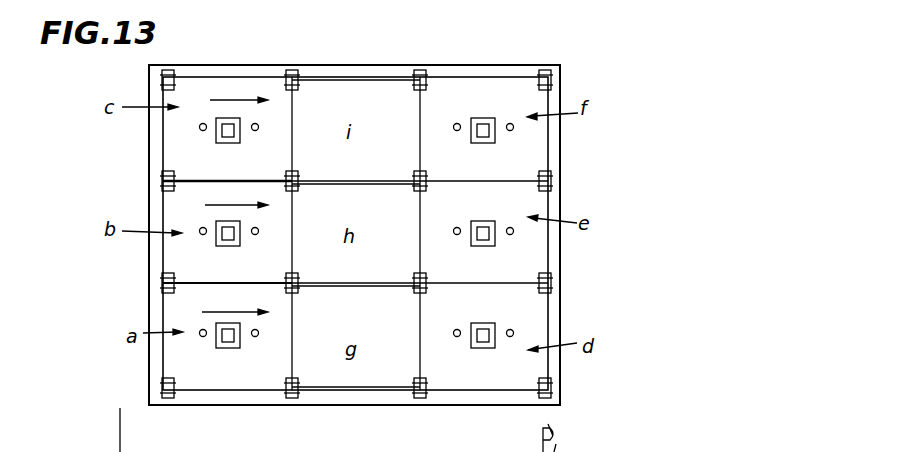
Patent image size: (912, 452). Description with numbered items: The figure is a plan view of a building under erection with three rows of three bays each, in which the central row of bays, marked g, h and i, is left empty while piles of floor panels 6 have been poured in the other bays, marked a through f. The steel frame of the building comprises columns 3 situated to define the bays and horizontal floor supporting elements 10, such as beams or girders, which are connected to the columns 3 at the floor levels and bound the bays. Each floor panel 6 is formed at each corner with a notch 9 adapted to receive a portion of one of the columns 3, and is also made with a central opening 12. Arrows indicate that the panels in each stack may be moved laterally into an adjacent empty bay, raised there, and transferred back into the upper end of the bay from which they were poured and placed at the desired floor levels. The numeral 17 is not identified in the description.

The column 3 is at (162, 183).
The floor panel 6 is at (271, 167).
The notch 9 is at (423, 172).
The horizontal floor supporting element 10 is at (338, 82).
The central opening 12 is at (226, 136).
The fragment 17 is at (120, 440).